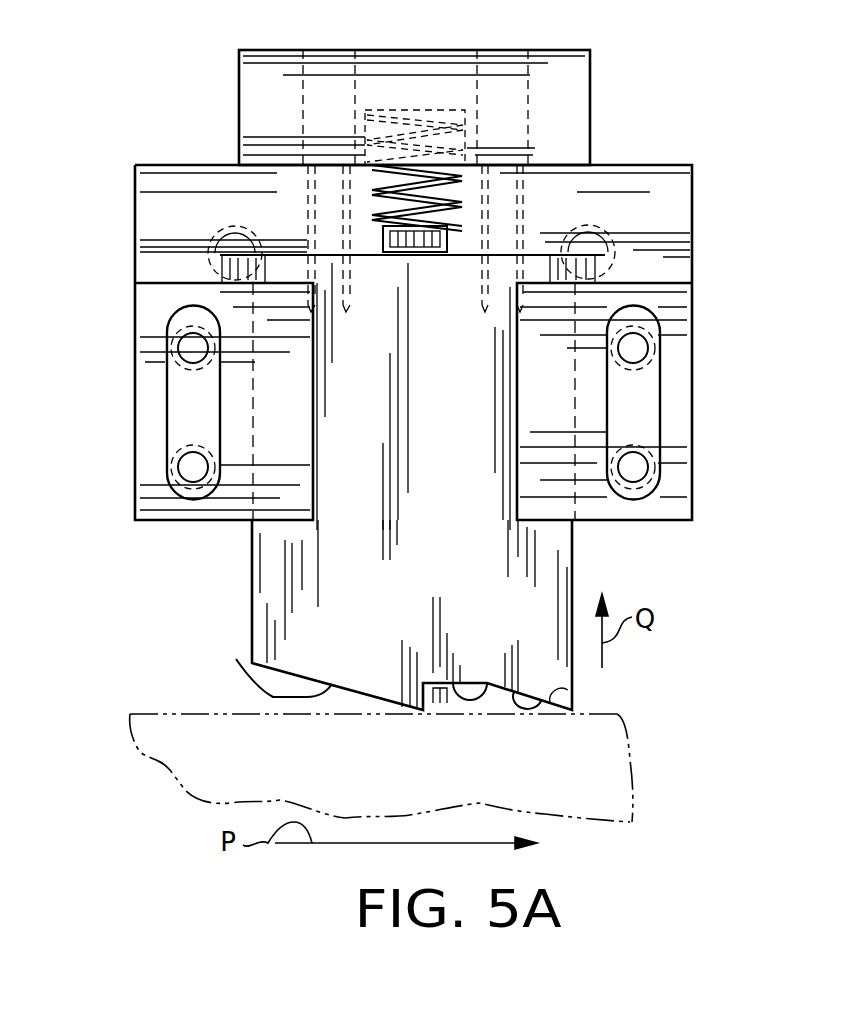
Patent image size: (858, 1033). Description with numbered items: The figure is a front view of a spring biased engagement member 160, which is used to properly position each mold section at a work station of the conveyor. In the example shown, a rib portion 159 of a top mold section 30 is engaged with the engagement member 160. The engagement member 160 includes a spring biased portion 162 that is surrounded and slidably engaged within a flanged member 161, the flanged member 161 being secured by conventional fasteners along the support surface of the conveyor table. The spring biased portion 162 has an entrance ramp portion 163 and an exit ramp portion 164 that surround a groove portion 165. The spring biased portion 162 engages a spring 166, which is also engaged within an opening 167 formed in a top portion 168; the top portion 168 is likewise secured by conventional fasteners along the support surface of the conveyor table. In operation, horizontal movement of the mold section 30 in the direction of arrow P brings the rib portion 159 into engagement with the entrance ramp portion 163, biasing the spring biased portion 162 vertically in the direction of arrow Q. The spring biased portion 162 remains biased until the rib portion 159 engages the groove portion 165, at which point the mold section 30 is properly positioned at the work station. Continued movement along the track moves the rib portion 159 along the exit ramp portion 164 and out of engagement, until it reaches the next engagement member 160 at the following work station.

The spring biased engagement member 160 is at (221, 77).
The top portion 168 is at (550, 98).
The opening 167 is at (365, 137).
The spring 166 is at (462, 205).
The flanged member 161 is at (695, 297).
The spring biased portion 162 is at (300, 570).
The entrance ramp portion 163 is at (250, 685).
The rib portion 159 is at (440, 688).
The groove portion 165 is at (475, 688).
The exit ramp portion 164 is at (567, 688).
The top mold section 30 is at (632, 780).